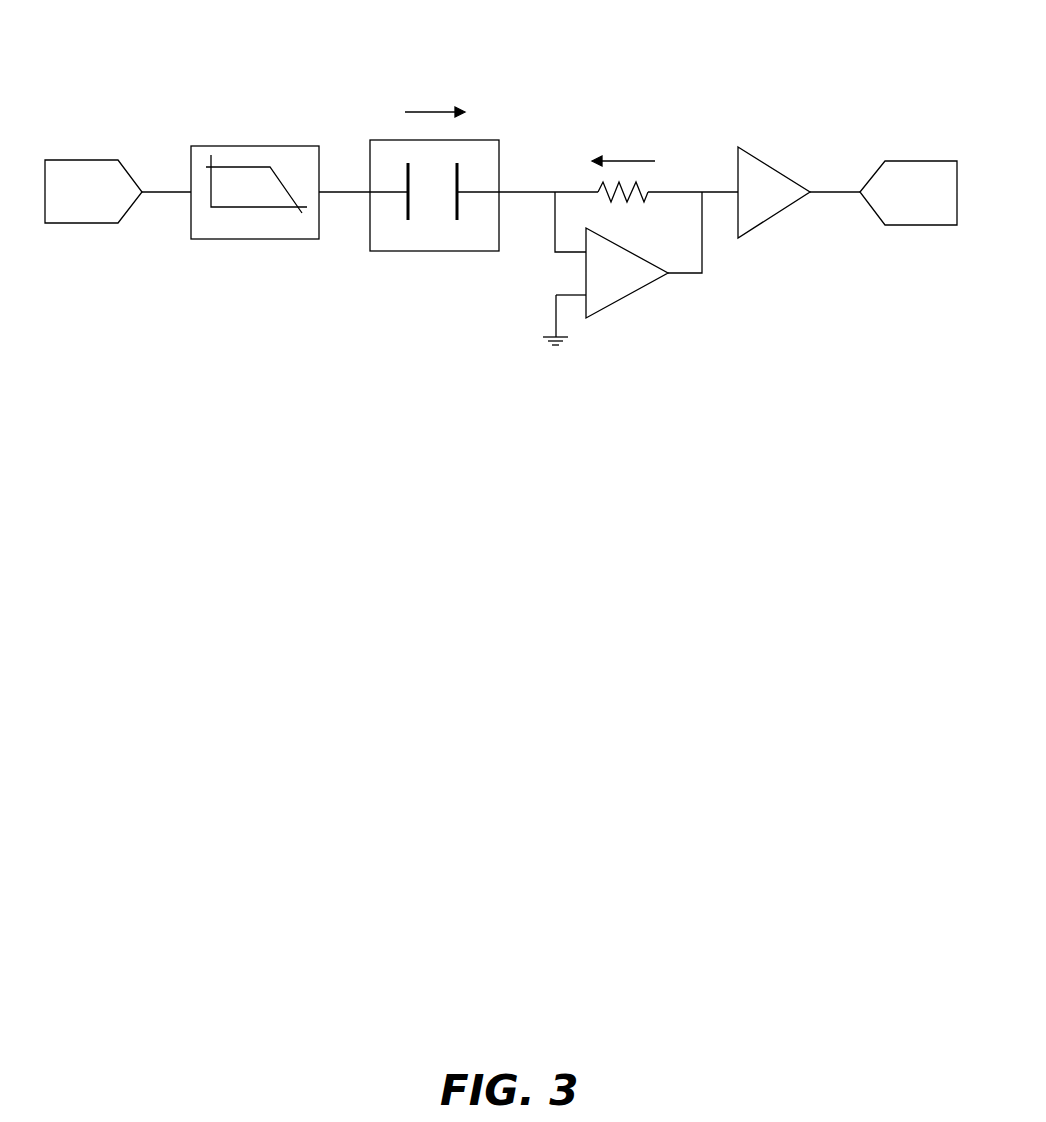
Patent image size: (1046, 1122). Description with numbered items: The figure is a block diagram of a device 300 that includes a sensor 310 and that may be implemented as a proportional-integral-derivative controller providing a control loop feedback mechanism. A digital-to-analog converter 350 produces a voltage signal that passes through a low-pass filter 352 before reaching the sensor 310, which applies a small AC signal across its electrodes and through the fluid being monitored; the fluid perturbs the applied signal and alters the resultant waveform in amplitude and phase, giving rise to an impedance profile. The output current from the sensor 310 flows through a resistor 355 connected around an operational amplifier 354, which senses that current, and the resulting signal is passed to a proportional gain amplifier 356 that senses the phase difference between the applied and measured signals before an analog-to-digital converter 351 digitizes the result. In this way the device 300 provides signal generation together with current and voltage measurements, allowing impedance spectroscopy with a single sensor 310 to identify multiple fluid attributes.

The device 300 is at (353, 32).
The digital-to-analog converter 350 is at (83, 223).
The low-pass filter 352 is at (262, 145).
The sensor 310 is at (407, 138).
The resistor 355 is at (600, 187).
The operational amplifier 354 is at (633, 293).
The proportional gain amplifier 356 is at (755, 153).
The analog-to-digital converter 351 is at (932, 225).